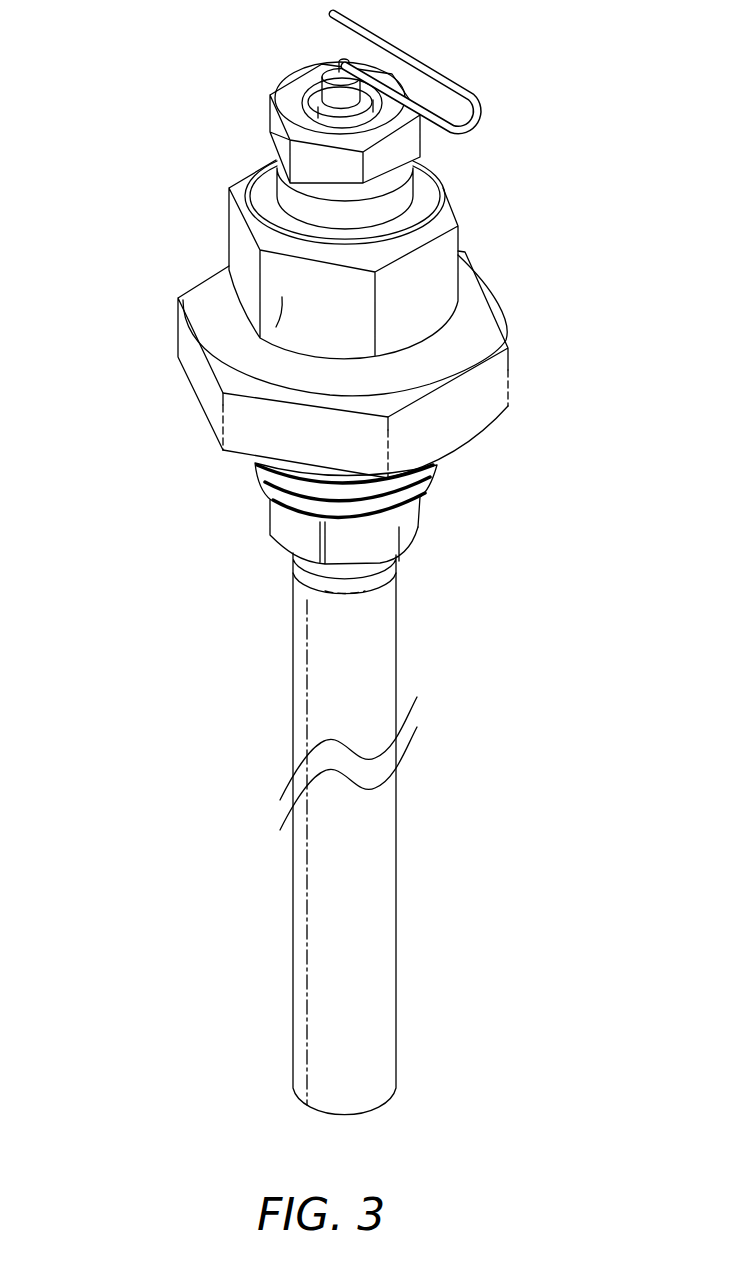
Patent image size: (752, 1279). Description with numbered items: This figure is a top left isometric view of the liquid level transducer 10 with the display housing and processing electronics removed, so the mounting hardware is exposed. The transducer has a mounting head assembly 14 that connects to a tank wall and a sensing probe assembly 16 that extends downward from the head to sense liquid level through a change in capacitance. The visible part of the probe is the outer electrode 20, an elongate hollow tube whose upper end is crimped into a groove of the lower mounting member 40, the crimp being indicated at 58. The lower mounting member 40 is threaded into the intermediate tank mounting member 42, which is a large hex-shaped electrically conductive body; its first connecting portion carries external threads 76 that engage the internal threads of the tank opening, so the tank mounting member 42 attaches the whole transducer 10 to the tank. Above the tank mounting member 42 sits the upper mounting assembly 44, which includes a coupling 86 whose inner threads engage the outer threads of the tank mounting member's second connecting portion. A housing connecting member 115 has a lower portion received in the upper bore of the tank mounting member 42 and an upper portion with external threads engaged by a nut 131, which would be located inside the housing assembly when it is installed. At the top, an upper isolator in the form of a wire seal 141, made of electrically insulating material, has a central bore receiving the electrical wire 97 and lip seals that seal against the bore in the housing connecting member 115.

The liquid level transducer 10 is at (578, 158).
The mounting head assembly 14 is at (172, 277).
The sensing probe assembly 16 is at (283, 967).
The outer electrode 20 is at (383, 942).
The lower mounting member 40 is at (428, 505).
The tank mounting member 42 is at (514, 366).
The upper mounting assembly 44 is at (466, 229).
The crimp 58 is at (390, 577).
The external threads 76 is at (282, 476).
The coupling 86 is at (276, 327).
The electrical wire 97 is at (413, 60).
The housing connecting member 115 is at (282, 191).
The nut 131 is at (272, 118).
The wire seal 141 is at (320, 100).